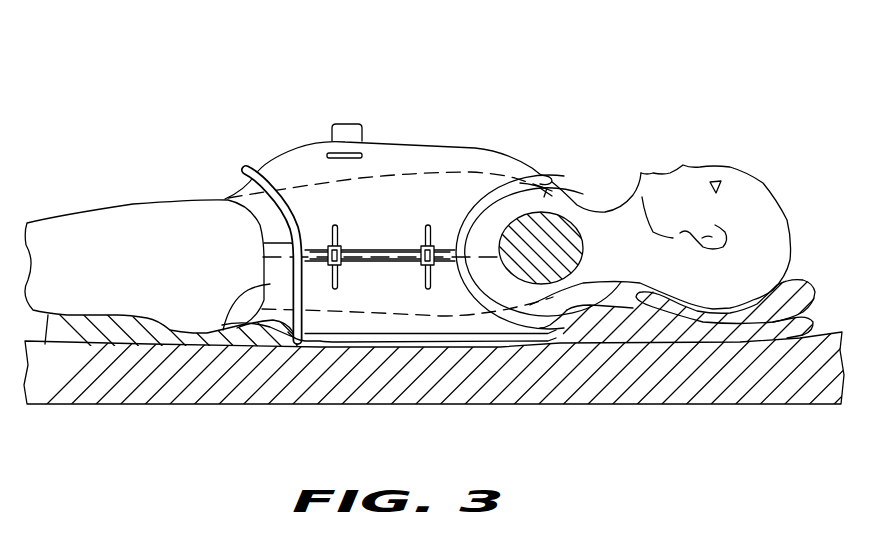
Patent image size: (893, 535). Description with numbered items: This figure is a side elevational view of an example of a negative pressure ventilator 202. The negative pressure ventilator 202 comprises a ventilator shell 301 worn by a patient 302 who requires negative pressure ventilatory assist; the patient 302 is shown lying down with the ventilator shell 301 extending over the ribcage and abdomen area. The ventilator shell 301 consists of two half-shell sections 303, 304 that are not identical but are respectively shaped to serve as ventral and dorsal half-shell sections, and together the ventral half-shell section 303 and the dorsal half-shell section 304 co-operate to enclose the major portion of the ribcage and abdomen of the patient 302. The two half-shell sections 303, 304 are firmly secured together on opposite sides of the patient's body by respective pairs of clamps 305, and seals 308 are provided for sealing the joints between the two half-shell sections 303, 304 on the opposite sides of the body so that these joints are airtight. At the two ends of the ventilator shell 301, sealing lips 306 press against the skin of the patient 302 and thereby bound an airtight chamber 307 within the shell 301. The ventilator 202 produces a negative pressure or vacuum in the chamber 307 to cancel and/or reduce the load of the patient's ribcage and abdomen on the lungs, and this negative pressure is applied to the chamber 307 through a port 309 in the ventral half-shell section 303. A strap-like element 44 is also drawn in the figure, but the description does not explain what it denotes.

The negative pressure ventilator 202 is at (518, 61).
The ventilator shell 301 is at (520, 154).
The patient 302 is at (89, 234).
The ventral half-shell section 303 is at (304, 197).
The dorsal half-shell section 304 is at (439, 303).
The clamps 305 is at (420, 243).
The sealing lips 306 is at (223, 330).
The airtight chamber 307 is at (447, 163).
The seals 308 is at (354, 263).
The port 309 is at (371, 155).
The strap 44 is at (378, 265).